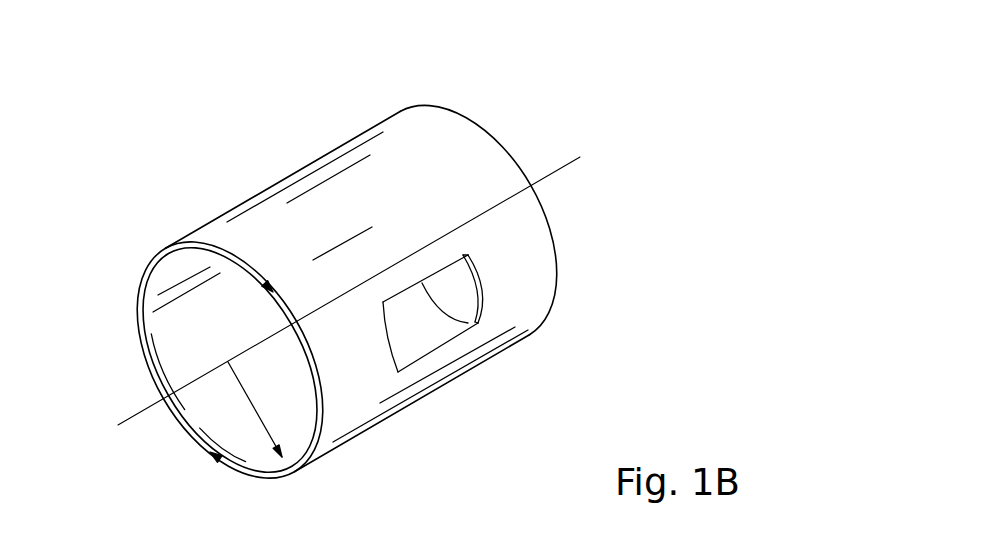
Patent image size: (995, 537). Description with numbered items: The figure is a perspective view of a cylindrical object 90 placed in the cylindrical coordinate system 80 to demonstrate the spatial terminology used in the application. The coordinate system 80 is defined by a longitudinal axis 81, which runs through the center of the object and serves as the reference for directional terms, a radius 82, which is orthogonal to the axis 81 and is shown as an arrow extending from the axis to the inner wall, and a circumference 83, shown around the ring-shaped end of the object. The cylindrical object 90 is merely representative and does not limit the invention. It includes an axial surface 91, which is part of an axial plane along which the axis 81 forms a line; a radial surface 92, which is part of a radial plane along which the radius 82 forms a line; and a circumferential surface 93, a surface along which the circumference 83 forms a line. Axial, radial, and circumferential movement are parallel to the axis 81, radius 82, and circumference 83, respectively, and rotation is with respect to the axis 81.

The cylindrical coordinate system 80 is at (500, 123).
The longitudinal axis 81 is at (130, 418).
The radius 82 is at (263, 414).
The circumference 83 is at (145, 270).
The cylindrical object 90 is at (383, 112).
The axial surface 91 is at (461, 328).
The radial surface 92 is at (244, 466).
The circumferential surface 93 is at (326, 198).